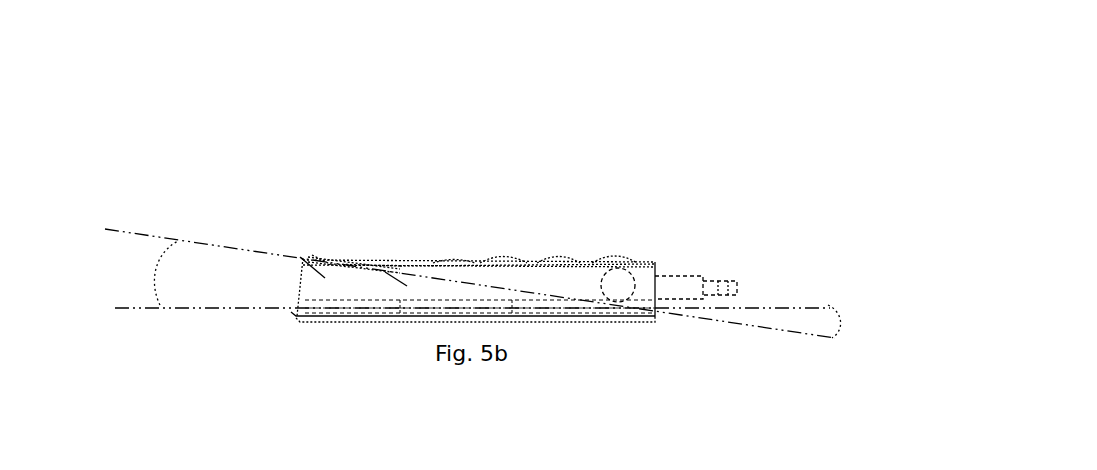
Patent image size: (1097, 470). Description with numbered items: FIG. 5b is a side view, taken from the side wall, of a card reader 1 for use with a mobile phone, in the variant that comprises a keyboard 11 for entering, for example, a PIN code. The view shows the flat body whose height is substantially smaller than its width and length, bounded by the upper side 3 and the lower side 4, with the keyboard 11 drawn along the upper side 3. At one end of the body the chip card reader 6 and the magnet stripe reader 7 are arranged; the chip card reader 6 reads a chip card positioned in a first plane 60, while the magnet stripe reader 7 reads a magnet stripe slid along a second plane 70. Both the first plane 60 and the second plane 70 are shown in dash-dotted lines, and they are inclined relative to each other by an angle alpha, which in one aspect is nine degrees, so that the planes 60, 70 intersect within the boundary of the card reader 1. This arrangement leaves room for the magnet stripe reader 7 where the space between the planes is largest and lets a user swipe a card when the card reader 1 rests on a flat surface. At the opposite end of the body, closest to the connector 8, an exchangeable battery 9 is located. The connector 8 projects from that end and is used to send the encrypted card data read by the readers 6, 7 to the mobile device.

The card reader 1 is at (269, 137).
The upper side 3 is at (645, 260).
The lower side 4 is at (583, 326).
The chip card reader 6 is at (345, 310).
The magnet stripe reader 7 is at (331, 262).
The connector 8 is at (703, 280).
The battery 9 is at (626, 298).
The keyboard 11 is at (502, 253).
The first plane 60 is at (170, 309).
The second plane 70 is at (222, 246).